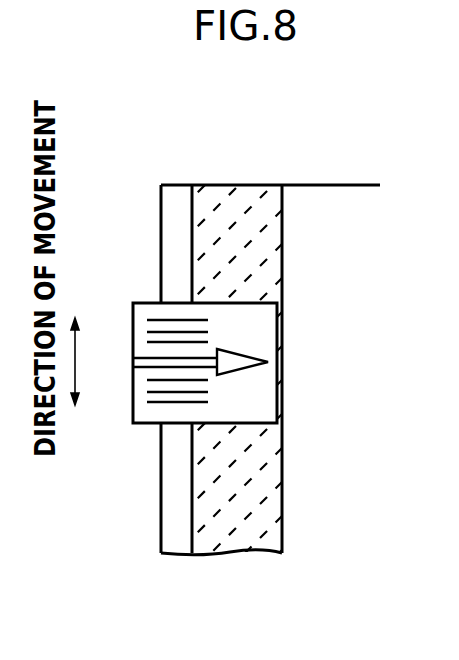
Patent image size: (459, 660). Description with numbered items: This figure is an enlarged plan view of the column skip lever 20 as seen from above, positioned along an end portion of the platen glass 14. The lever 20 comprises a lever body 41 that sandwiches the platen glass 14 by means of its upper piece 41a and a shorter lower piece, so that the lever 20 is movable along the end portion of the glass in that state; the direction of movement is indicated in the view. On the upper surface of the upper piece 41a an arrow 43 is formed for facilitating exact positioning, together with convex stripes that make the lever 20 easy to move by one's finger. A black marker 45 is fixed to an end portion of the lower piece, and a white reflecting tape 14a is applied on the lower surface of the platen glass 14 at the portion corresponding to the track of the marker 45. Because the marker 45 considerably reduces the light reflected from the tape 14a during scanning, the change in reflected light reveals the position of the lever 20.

The platen glass 14 is at (338, 205).
The white reflecting tape 14a is at (229, 205).
The column skip lever 20 is at (232, 379).
The lever body 41 is at (134, 340).
The arrow 43 is at (263, 357).
The black marker 45 is at (150, 402).
The upper piece 41a is at (138, 425).